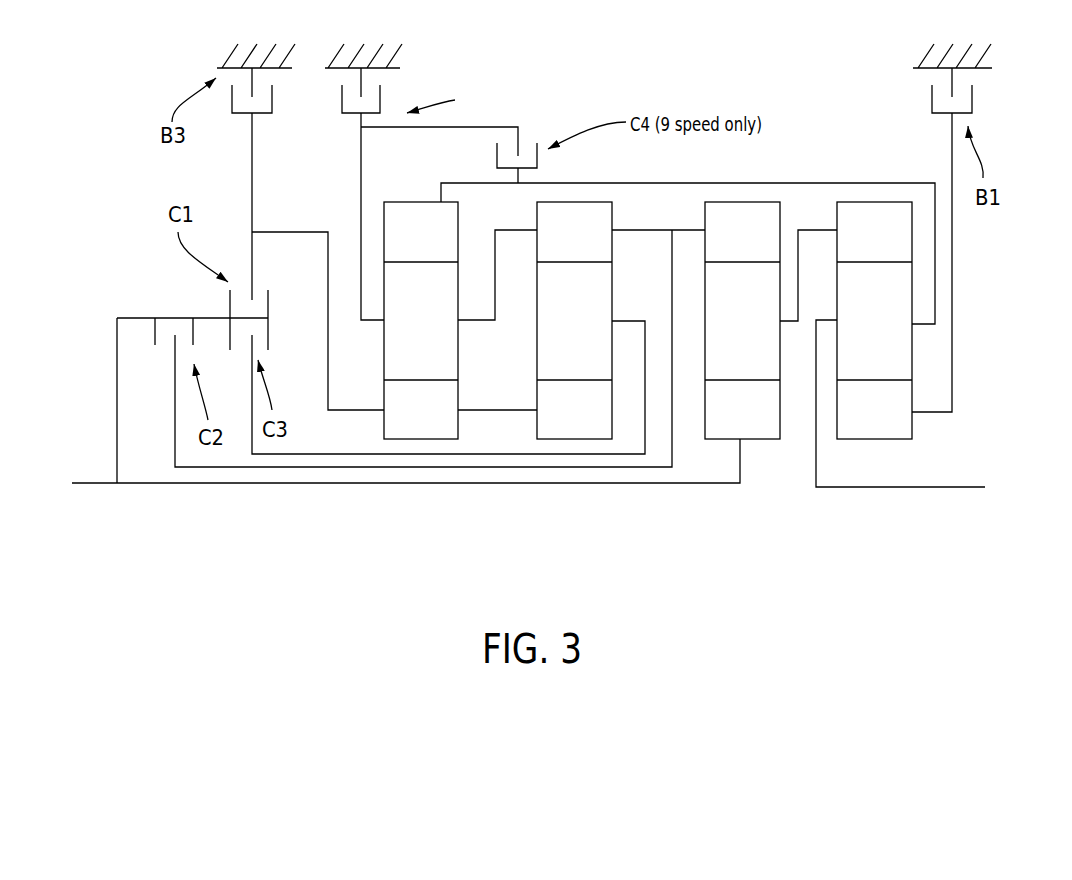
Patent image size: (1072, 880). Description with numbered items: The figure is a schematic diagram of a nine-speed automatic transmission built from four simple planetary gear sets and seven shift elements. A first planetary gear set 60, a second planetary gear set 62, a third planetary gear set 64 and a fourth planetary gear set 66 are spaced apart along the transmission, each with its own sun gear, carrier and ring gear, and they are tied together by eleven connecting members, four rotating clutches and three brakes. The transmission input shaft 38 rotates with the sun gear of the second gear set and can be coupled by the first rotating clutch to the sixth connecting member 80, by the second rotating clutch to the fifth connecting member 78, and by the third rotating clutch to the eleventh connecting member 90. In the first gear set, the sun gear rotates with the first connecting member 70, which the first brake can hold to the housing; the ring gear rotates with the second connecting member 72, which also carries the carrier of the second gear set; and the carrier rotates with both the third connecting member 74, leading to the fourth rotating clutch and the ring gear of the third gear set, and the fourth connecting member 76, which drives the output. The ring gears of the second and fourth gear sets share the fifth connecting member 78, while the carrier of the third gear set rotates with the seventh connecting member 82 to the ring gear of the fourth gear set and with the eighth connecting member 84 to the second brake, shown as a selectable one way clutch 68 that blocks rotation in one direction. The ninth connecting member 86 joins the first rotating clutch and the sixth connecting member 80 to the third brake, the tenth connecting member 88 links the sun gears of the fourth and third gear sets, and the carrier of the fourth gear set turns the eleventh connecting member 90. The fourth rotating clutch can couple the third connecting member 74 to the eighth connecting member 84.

The transmission input shaft 38 is at (100, 486).
The first planetary gear set 60 is at (880, 505).
The second planetary gear set 62 is at (744, 503).
The third planetary gear set 64 is at (418, 490).
The fourth planetary gear set 66 is at (586, 490).
The selectable one way clutch 68 is at (412, 74).
The first connecting member 70 is at (954, 263).
The second connecting member 72 is at (812, 229).
The third connecting member 74 is at (873, 183).
The fourth connecting member 76 is at (914, 486).
The fifth connecting member 78 is at (682, 229).
The sixth connecting member 80 is at (308, 232).
The seventh connecting member 82 is at (463, 322).
The eighth connecting member 84 is at (361, 185).
The ninth connecting member 86 is at (252, 178).
The tenth connecting member 88 is at (498, 408).
The eleventh connecting member 90 is at (627, 320).